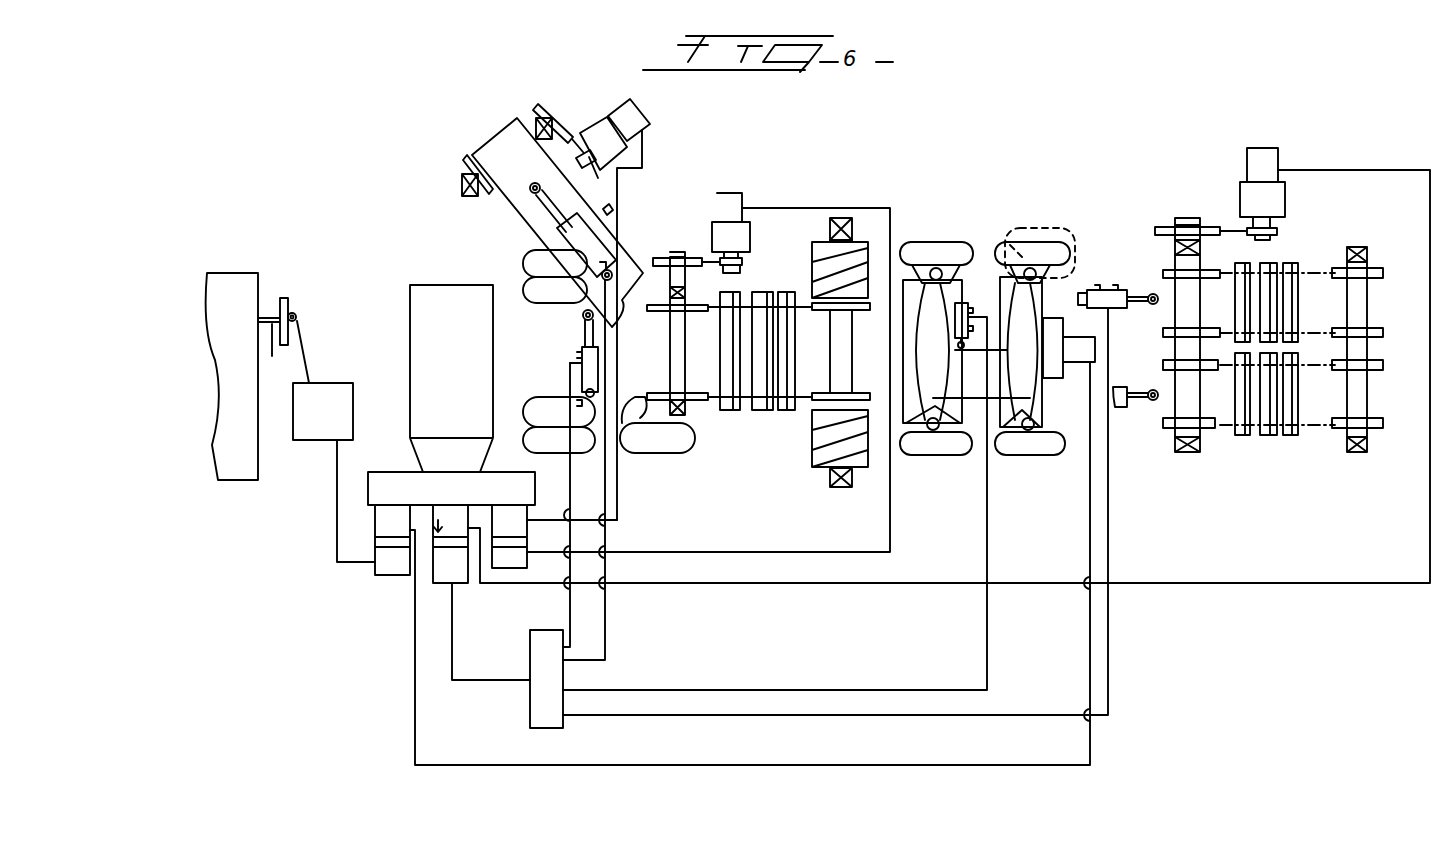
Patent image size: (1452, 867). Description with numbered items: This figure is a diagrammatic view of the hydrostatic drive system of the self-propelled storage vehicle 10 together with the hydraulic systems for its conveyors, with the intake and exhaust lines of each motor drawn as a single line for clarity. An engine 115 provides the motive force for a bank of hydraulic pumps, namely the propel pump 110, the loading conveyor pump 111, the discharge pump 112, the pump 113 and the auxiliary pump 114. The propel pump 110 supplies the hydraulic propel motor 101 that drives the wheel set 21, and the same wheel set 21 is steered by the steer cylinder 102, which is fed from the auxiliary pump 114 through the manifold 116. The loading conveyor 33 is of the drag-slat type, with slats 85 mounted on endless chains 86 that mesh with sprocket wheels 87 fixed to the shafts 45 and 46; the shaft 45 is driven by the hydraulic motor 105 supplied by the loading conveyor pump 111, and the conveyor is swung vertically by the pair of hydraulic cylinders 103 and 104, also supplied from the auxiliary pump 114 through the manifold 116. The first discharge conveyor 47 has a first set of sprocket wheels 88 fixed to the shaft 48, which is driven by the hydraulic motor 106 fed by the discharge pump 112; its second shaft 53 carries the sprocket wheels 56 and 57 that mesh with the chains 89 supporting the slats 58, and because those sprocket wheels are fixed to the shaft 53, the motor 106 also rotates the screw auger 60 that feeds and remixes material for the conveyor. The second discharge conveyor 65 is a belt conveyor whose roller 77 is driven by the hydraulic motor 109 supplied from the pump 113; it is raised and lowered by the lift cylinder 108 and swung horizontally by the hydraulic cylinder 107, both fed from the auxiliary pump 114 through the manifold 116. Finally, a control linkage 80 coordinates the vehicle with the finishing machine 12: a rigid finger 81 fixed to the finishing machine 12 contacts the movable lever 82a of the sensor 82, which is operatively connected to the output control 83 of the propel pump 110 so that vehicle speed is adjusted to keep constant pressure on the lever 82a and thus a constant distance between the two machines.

The self-propelled storage vehicle 10 is at (947, 134).
The finishing machine 12 is at (232, 268).
The second wheel set 21 is at (1005, 472).
The loading conveyor 33 is at (1306, 482).
The shaft 45 is at (1185, 452).
The shaft 46 is at (1360, 452).
The first discharge conveyor 47 is at (769, 478).
The shaft 48 is at (688, 413).
The second shaft 53 is at (845, 216).
The sprocket wheel 56 is at (822, 393).
The sprocket wheel 57 is at (865, 312).
The slats 58 is at (762, 410).
The screw auger 60 is at (818, 250).
The second discharge conveyor 65 is at (541, 100).
The end roller 77 is at (468, 158).
The control linkage 80 is at (290, 291).
The rigid finger 81 is at (268, 330).
The sensor 82 is at (327, 394).
The movable lever 82a is at (305, 358).
The output control 83 is at (381, 560).
The slats 85 is at (1245, 436).
The endless chains 86 is at (1305, 272).
The sprocket wheels 87 is at (1372, 272).
The first set of sprocket wheels 88 is at (668, 393).
The chains 89 is at (748, 305).
The hydraulic propel motor 101 is at (1052, 328).
The steer cylinder 102 is at (960, 302).
The hydraulic cylinder 103 is at (1105, 290).
The hydraulic cylinder 104 is at (1122, 408).
The hydraulic motor 105 is at (1262, 158).
The hydraulic motor 106 is at (728, 192).
The hydraulic cylinder 107 is at (590, 360).
The lift cylinder 108 is at (590, 243).
The hydraulic motor 109 is at (632, 128).
The propel pump 110 is at (390, 512).
The loading conveyor pump 111 is at (440, 540).
The discharge pump 112 is at (510, 562).
The pump 113 is at (510, 518).
The auxiliary pump 114 is at (440, 575).
The engine 115 is at (430, 298).
The manifold 116 is at (545, 688).